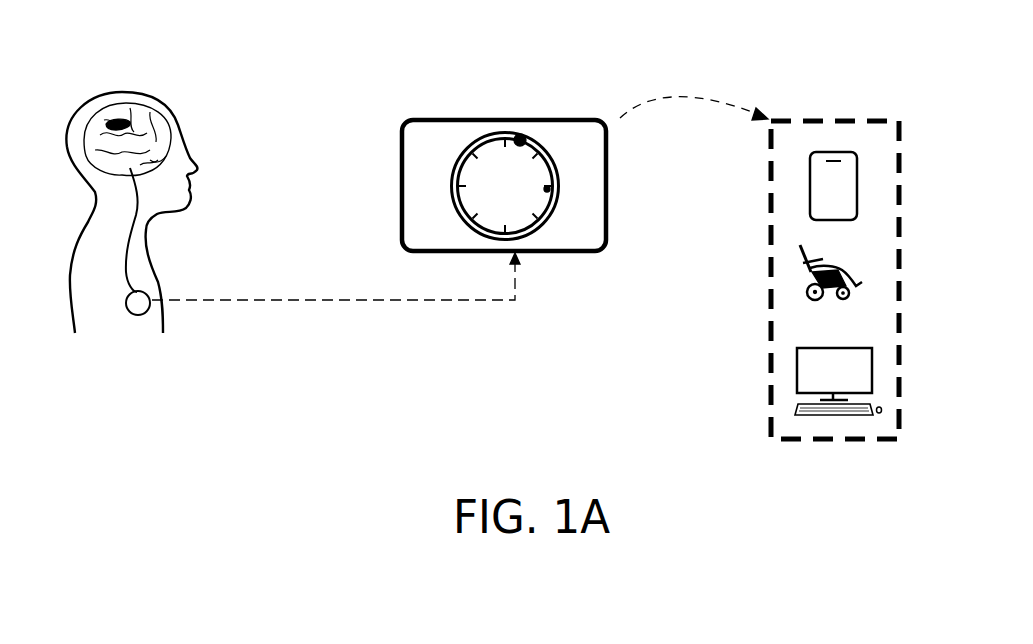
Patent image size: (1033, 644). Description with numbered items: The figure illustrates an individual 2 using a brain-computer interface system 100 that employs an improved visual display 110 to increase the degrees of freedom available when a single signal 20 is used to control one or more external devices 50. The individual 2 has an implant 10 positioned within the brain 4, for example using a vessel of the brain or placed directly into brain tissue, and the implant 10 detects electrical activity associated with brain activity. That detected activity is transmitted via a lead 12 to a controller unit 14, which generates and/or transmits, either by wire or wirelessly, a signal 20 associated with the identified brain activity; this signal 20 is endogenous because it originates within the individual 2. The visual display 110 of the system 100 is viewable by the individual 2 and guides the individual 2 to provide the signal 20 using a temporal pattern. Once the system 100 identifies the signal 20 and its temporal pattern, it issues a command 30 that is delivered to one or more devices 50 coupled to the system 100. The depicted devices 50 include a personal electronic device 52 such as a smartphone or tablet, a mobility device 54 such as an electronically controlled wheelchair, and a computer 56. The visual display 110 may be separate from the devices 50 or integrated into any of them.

The individual 2 is at (67, 136).
The brain 4 is at (176, 128).
The implant 10 is at (118, 122).
The lead 12 is at (130, 228).
The controller unit 14 is at (153, 296).
The signal 20 is at (327, 301).
The command 30 is at (678, 95).
The external devices 50 is at (813, 120).
The personal electronic device 52 is at (857, 178).
The mobility device 54 is at (856, 280).
The computer 56 is at (872, 381).
The interface system 100 is at (538, 64).
The visual display 110 is at (568, 256).